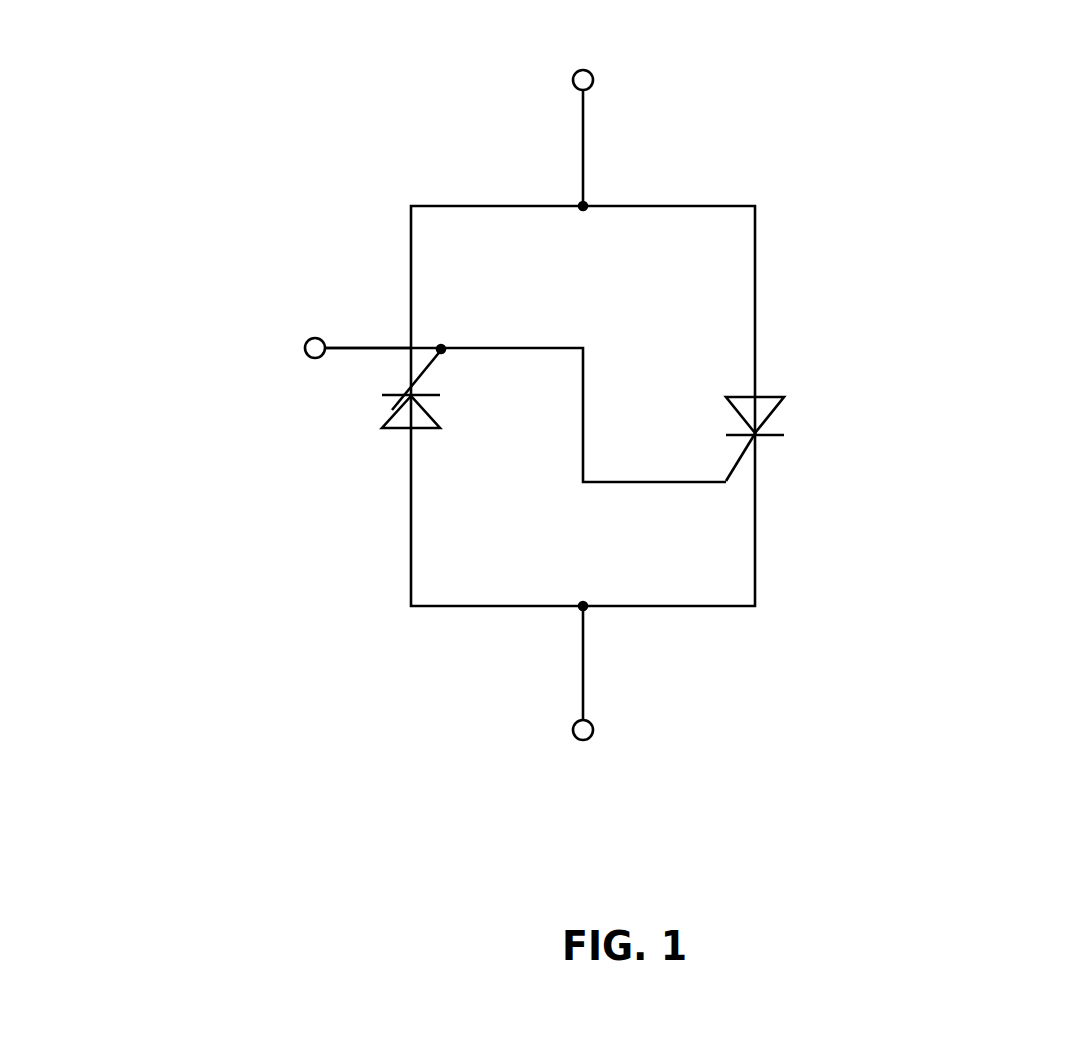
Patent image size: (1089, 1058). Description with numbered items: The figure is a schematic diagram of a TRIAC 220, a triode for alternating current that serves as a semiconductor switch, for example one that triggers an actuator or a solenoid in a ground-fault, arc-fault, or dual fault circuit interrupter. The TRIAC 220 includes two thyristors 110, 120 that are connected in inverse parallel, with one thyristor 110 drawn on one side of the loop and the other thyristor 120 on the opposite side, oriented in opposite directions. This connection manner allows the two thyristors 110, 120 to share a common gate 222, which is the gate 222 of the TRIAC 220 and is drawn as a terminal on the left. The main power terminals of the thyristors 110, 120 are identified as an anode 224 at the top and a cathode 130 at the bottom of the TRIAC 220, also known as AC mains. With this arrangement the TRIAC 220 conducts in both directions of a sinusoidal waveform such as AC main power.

The TRIAC 220 is at (1044, 62).
The anode 224 is at (605, 177).
The cathode 130 is at (603, 635).
The gate 222 is at (292, 348).
The thyristor 110 is at (345, 453).
The thyristor 120 is at (810, 364).